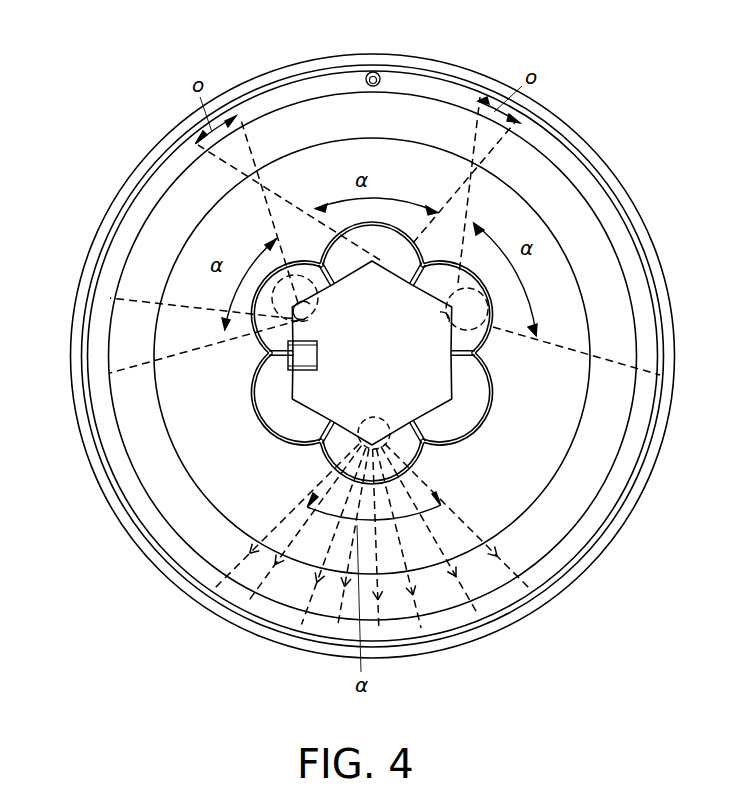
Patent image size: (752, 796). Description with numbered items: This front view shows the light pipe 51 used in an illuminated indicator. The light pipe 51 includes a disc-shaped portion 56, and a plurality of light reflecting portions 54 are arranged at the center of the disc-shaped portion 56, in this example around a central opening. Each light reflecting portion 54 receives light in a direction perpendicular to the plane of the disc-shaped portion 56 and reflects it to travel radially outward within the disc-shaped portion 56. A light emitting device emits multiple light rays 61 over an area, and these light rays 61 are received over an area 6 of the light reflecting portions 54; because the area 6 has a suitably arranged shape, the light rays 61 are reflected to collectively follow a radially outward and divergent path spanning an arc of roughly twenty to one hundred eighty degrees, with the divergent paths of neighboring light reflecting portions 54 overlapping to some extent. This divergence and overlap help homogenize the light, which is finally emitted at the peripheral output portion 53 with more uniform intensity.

The light pipe 51 is at (116, 110).
The output portion 53 is at (72, 405).
The light reflecting portion 54 is at (385, 240).
The disc-shaped portion 56 is at (553, 323).
The area 6 is at (310, 318).
The light ray 61 is at (237, 568).